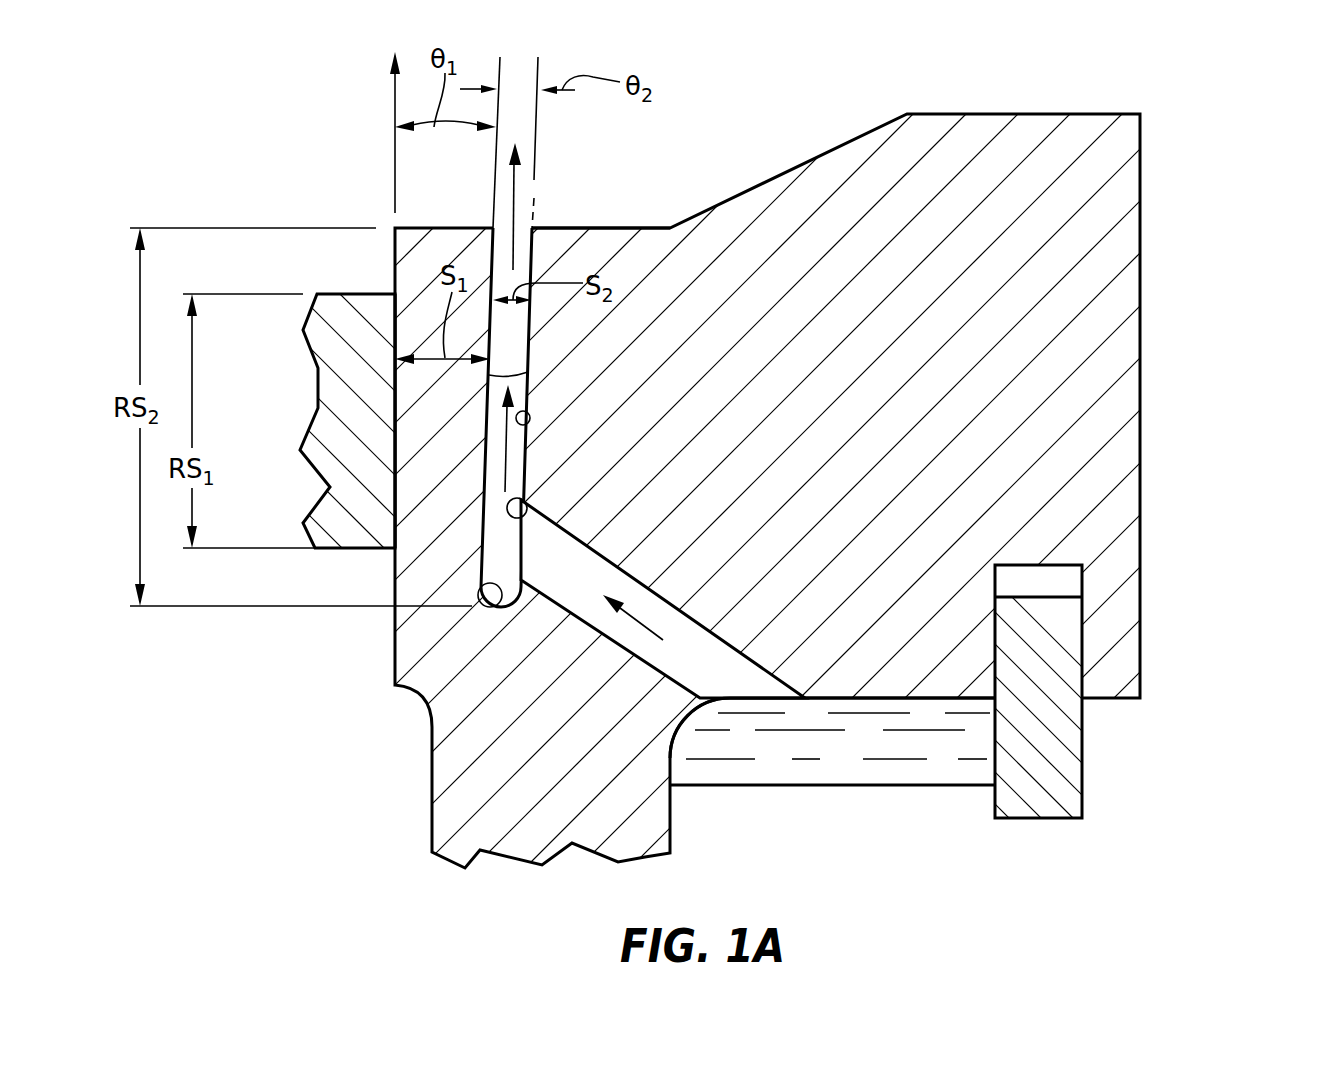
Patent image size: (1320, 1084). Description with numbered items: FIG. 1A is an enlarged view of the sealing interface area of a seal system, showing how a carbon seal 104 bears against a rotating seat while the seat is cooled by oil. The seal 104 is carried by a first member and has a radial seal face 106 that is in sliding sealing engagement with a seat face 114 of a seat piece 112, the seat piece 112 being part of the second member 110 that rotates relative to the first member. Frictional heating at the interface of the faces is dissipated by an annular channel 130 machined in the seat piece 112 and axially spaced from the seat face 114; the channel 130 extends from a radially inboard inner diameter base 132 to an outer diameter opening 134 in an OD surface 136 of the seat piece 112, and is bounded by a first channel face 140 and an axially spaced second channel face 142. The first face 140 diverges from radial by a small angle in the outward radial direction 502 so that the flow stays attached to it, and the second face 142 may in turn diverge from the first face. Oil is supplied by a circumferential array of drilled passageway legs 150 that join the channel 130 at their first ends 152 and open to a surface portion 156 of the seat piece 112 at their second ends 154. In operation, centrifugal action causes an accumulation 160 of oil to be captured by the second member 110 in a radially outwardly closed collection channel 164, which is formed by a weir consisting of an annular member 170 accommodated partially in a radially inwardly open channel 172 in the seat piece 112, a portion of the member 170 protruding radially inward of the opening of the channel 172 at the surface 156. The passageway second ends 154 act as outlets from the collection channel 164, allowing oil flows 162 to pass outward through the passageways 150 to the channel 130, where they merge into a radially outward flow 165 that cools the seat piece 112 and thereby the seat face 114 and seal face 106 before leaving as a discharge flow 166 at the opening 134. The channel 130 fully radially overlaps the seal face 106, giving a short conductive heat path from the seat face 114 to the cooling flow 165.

The outward radial direction 502 is at (394, 97).
The second member 110 is at (1170, 177).
The seat piece 112 is at (1073, 318).
The seal 104 is at (332, 527).
The seal face 106 is at (392, 552).
The seat face 114 is at (394, 442).
The annular channel 130 is at (524, 329).
The inner diameter base 132 is at (478, 600).
The outer diameter opening 134 is at (537, 213).
The OD surface 136 is at (625, 227).
The first channel face 140 is at (528, 373).
The second channel face 142 is at (529, 422).
The passageway legs 150 is at (573, 620).
The first ends 152 is at (528, 508).
The second ends 154 is at (728, 703).
The surface portion 156 is at (842, 700).
The oil accumulation 160 is at (765, 760).
The oil flows 162 is at (623, 663).
The collection channel 164 is at (952, 825).
The channel flow 165 is at (505, 445).
The discharge flow 166 is at (518, 188).
The annular member 170 is at (1055, 760).
The radially inwardly open channel 172 is at (1073, 578).